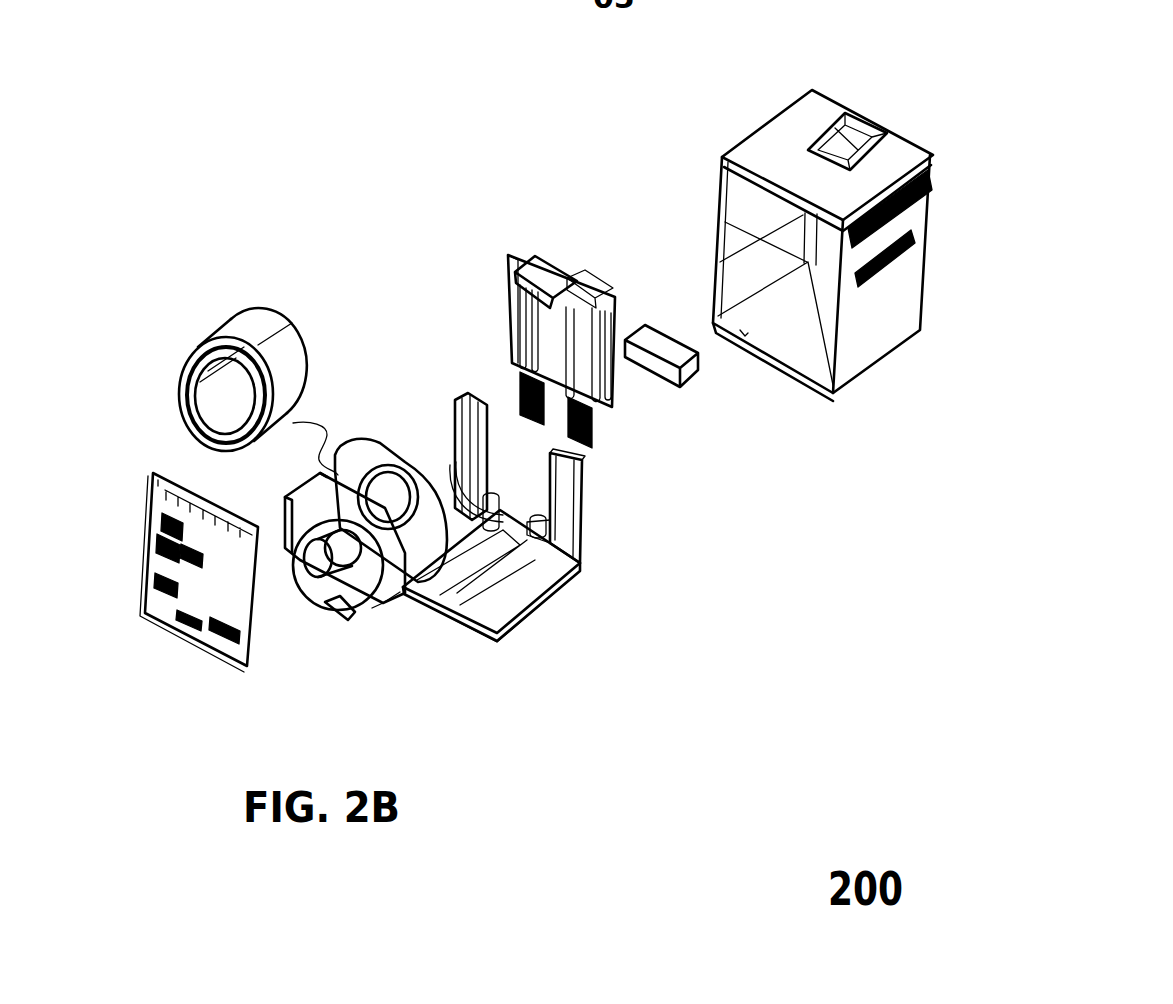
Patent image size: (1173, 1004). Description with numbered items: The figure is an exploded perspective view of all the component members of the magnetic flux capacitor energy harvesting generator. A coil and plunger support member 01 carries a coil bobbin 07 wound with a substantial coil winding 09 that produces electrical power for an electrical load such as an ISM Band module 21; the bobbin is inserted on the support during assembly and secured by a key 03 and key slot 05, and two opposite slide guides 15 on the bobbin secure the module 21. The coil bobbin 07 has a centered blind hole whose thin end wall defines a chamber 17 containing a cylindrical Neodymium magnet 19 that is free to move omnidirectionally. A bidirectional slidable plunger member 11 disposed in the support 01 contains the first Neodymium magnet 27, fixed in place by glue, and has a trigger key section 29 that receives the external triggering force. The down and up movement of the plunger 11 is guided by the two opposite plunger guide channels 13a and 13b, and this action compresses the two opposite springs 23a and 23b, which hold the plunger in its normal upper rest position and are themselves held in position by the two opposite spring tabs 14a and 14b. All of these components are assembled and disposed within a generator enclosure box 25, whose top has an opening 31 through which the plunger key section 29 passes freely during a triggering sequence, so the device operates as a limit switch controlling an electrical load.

The coil and plunger support member 01 is at (597, 550).
The key 03 is at (355, 615).
The key slot 05 is at (499, 633).
The coil bobbin 07 is at (373, 438).
The coil winding 09 is at (227, 317).
The slidable plunger member 11 is at (568, 266).
The plunger guide channel 13a is at (462, 395).
The plunger guide channel 13b is at (566, 466).
The spring tab 14a is at (452, 473).
The spring tab 14b is at (560, 542).
The slide guide 15 is at (285, 515).
The blind hole chamber 17 is at (383, 603).
The cylindrical Neodymium magnet 19 is at (318, 580).
The ISM Band module 21 is at (198, 582).
The spring 23a is at (520, 395).
The spring 23b is at (593, 447).
The generator enclosure box 25 is at (800, 113).
The first Neodymium magnet 27 is at (690, 380).
The trigger key section 29 is at (553, 280).
The opening 31 is at (873, 113).